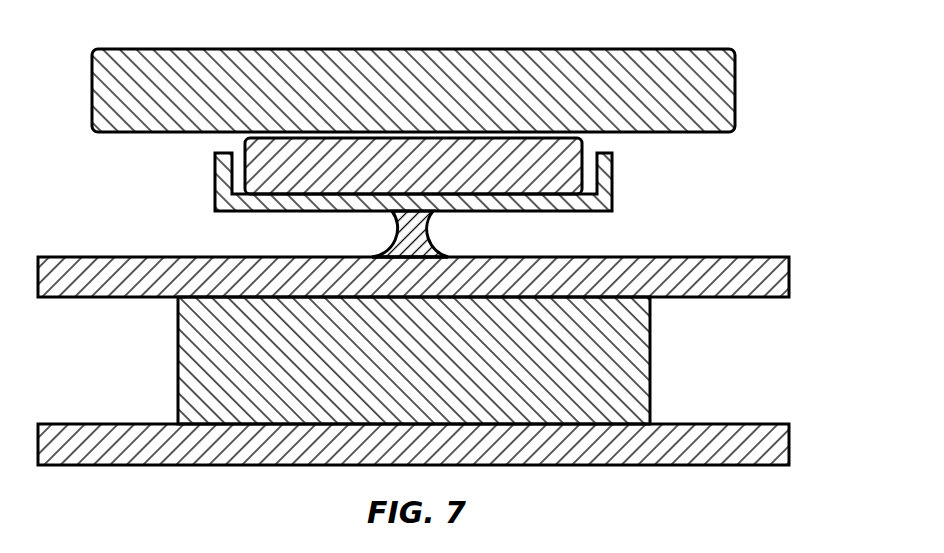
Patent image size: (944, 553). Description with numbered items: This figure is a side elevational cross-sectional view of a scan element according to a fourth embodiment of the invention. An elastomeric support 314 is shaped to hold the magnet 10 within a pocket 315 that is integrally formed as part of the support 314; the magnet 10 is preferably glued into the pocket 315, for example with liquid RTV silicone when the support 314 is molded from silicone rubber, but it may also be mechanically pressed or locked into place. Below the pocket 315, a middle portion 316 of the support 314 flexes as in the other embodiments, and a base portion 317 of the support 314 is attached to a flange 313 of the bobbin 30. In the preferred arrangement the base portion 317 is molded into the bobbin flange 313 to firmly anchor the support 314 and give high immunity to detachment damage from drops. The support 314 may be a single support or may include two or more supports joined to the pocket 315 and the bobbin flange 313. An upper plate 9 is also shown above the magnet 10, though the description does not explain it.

The upper plate 9 is at (163, 49).
The magnet 10 is at (265, 165).
The bobbin 30 is at (459, 347).
The flange 313 is at (419, 259).
The elastomeric support 314 is at (412, 197).
The pocket 315 is at (215, 180).
The middle portion 316 is at (432, 230).
The base portion 317 is at (373, 256).